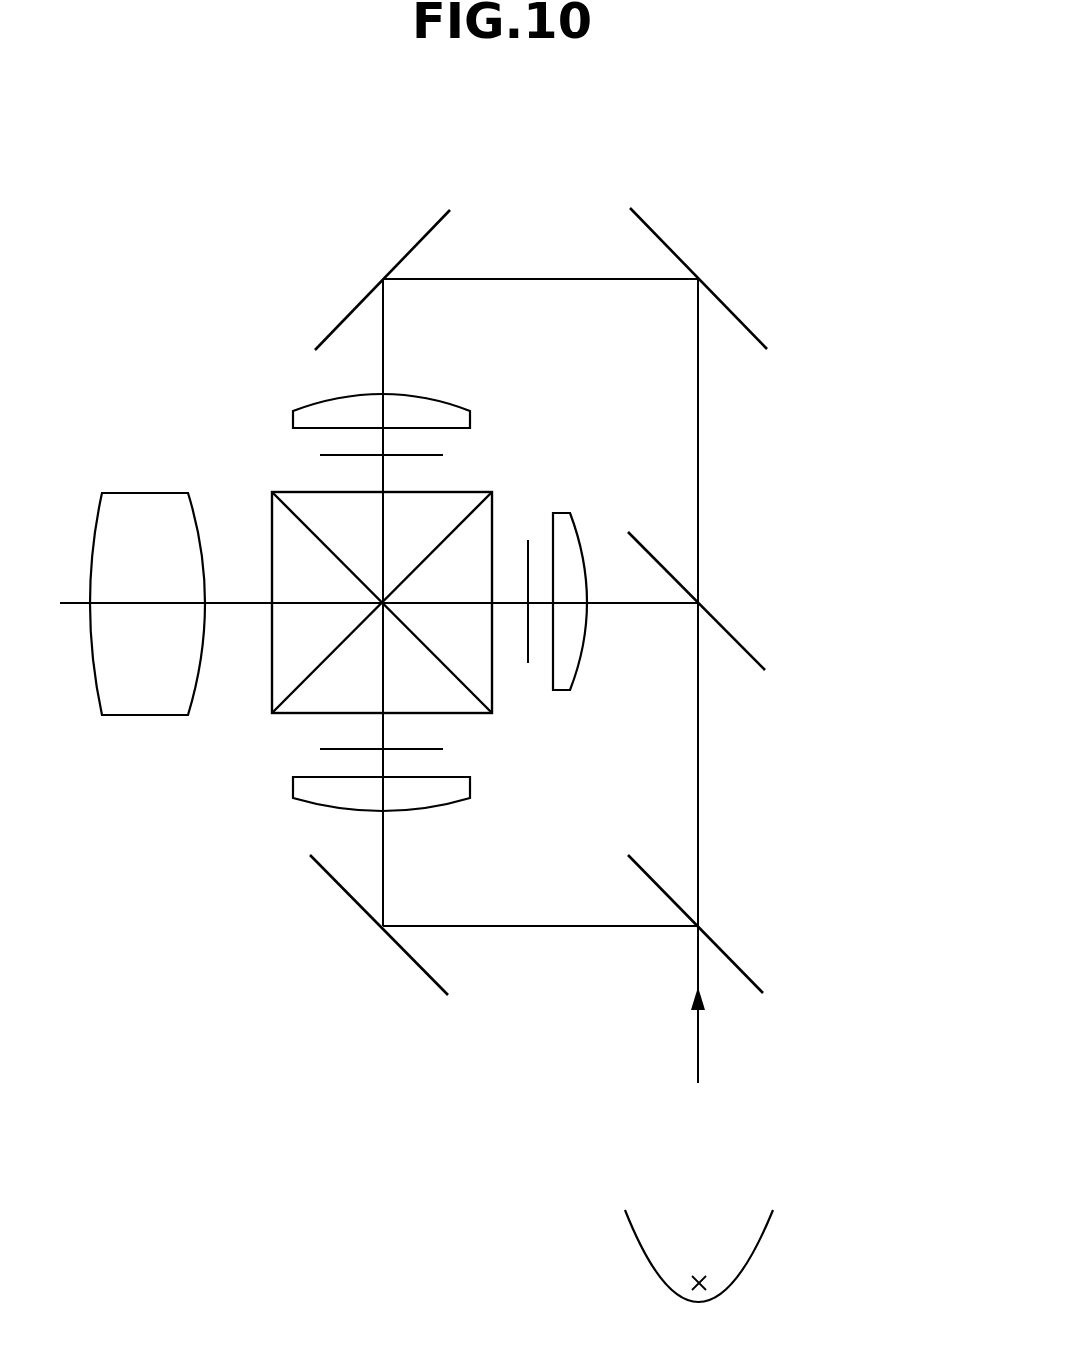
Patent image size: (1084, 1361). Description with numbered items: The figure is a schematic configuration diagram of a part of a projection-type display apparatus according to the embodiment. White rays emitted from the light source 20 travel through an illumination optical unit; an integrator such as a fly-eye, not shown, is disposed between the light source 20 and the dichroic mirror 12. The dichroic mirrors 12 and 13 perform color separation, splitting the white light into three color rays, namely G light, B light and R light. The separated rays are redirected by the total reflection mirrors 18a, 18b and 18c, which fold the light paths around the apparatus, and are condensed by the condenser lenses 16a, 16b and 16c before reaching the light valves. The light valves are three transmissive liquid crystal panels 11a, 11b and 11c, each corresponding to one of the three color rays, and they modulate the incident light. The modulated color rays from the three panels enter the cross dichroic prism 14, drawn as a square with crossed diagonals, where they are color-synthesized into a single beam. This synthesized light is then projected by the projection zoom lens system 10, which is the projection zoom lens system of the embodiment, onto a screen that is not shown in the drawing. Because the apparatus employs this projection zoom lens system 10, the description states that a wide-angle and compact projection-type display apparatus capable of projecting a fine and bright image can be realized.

The projection zoom lens system 10 is at (142, 705).
The transmissive liquid crystal panel 11a is at (427, 743).
The transmissive liquid crystal panel 11b is at (528, 557).
The transmissive liquid crystal panel 11c is at (328, 455).
The dichroic mirror 12 is at (743, 970).
The dichroic mirror 13 is at (743, 645).
The cross dichroic prism 14 is at (280, 675).
The condenser lens 16a is at (433, 795).
The condenser lens 16b is at (573, 680).
The condenser lens 16c is at (445, 407).
The total reflection mirror 18a is at (412, 958).
The total reflection mirror 18b is at (738, 318).
The total reflection mirror 18c is at (313, 347).
The light source 20 is at (798, 1241).